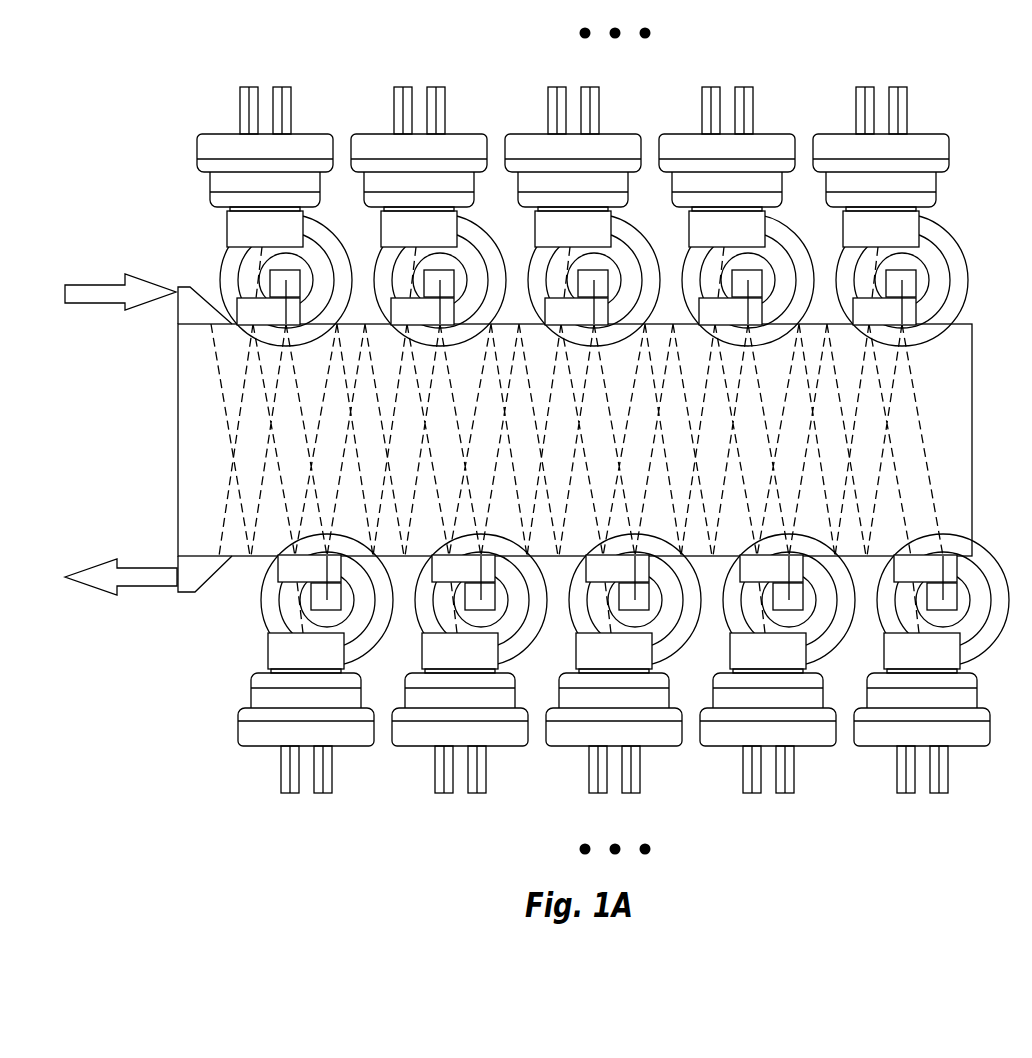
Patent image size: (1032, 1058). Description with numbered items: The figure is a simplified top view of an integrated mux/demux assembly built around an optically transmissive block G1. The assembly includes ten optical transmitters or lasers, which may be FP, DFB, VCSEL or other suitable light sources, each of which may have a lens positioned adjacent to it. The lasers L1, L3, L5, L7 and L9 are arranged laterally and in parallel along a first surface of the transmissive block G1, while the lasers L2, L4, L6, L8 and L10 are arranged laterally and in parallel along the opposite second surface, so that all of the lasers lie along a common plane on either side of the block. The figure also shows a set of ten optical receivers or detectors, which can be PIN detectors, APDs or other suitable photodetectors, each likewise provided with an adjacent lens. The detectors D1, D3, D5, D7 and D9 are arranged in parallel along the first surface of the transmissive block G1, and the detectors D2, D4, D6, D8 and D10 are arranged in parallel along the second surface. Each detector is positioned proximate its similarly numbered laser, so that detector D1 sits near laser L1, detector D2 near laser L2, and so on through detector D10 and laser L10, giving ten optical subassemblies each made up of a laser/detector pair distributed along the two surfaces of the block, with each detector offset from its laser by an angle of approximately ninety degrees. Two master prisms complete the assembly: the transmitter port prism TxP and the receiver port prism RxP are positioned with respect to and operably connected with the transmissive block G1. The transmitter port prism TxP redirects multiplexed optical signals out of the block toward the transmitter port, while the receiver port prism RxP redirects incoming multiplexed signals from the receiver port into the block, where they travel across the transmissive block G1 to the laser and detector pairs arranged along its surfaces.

The optically transmissive block G1 is at (963, 433).
The receiver port prism RxP is at (187, 293).
The transmitter port prism TxP is at (185, 585).
The laser L1 is at (966, 747).
The laser L2 is at (929, 133).
The laser L3 is at (812, 747).
The laser L4 is at (775, 133).
The laser L5 is at (658, 747).
The laser L6 is at (621, 133).
The laser L7 is at (504, 747).
The laser L8 is at (467, 133).
The laser L9 is at (350, 747).
The laser L10 is at (313, 133).
The detector D1 is at (966, 625).
The detector D2 is at (926, 252).
The detector D3 is at (812, 625).
The detector D4 is at (772, 252).
The detector D5 is at (658, 625).
The detector D6 is at (618, 252).
The detector D7 is at (504, 625).
The detector D8 is at (464, 252).
The detector D9 is at (350, 625).
The detector D10 is at (310, 252).